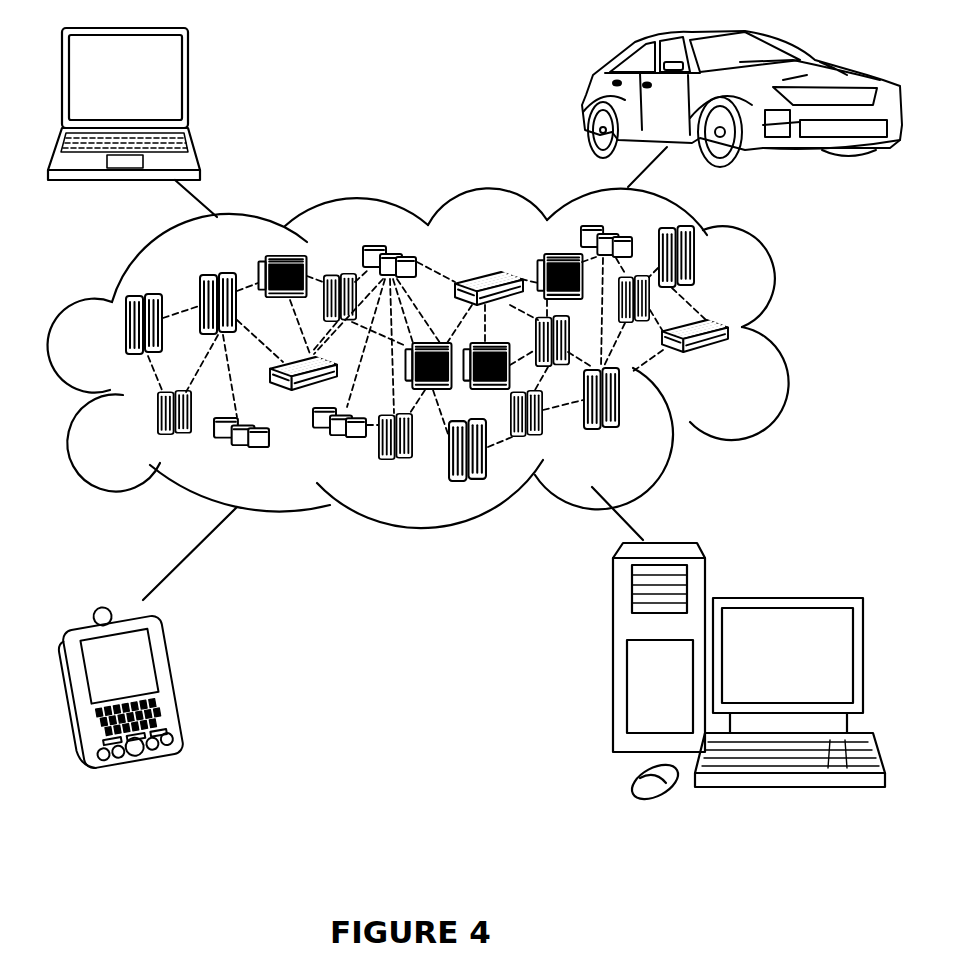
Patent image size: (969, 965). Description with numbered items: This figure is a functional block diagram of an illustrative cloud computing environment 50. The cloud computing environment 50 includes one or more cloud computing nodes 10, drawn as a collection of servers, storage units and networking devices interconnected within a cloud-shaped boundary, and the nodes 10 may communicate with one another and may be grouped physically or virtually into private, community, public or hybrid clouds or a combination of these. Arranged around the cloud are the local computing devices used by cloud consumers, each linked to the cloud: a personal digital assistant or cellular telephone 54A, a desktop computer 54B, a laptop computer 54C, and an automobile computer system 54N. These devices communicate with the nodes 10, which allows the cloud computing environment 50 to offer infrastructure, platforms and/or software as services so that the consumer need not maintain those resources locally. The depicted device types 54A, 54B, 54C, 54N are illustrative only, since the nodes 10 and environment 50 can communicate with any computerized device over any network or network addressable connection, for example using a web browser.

The cloud computing node 10 is at (740, 366).
The cloud computing environment 50 is at (786, 334).
The personal digital assistant or cellular telephone 54A is at (178, 680).
The desktop computer 54B is at (785, 598).
The laptop computer 54C is at (188, 85).
The automobile computer system 54N is at (585, 100).